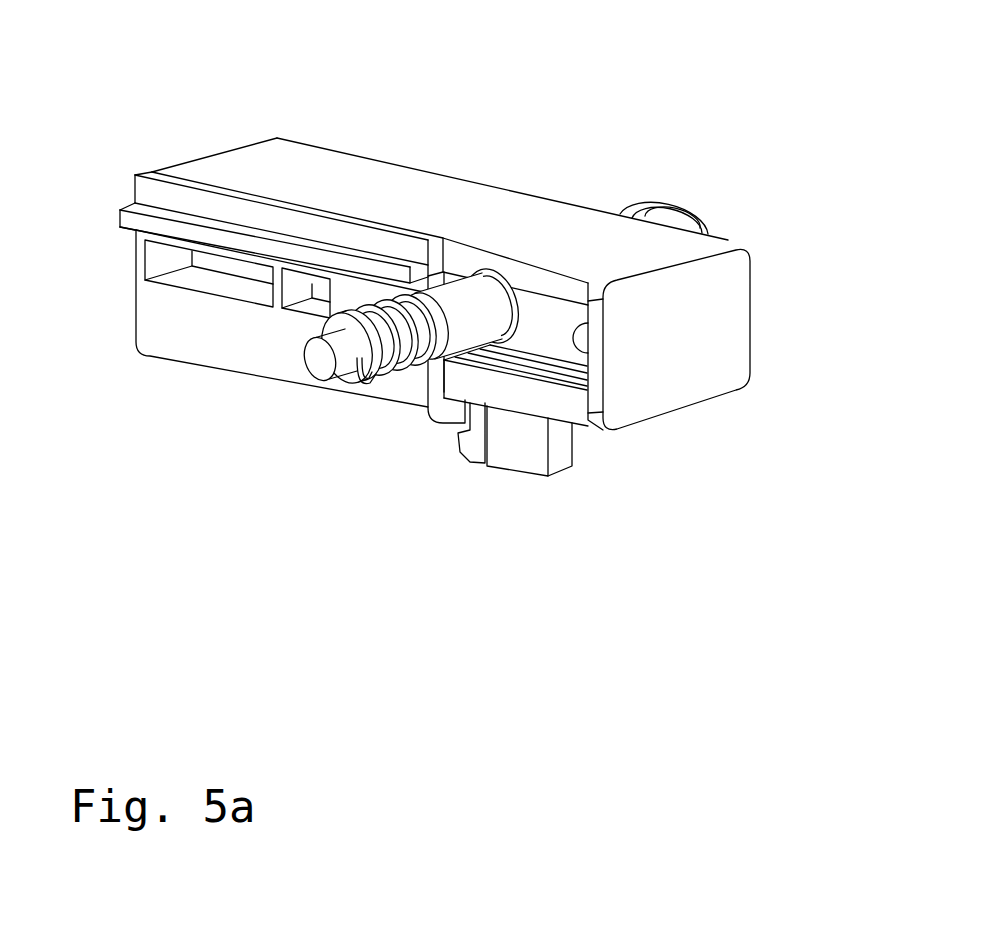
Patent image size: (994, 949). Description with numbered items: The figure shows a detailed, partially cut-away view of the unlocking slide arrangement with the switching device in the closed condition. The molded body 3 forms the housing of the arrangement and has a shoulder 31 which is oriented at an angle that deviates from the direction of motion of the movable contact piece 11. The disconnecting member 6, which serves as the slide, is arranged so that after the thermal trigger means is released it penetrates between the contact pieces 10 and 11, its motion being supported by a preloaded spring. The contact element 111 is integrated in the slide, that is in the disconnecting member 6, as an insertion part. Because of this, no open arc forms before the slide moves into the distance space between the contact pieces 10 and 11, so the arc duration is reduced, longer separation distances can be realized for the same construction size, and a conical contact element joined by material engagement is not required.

The molded body 3 is at (265, 92).
The disconnecting member 6 is at (693, 247).
The contact piece 10 is at (318, 363).
The movable contact piece 11 is at (692, 205).
The shoulder 31 is at (160, 332).
The contact element 111 is at (513, 322).